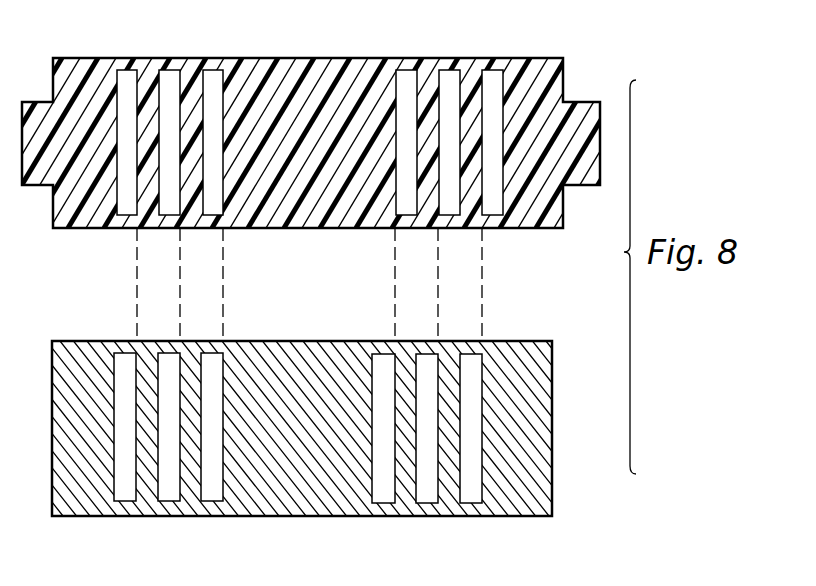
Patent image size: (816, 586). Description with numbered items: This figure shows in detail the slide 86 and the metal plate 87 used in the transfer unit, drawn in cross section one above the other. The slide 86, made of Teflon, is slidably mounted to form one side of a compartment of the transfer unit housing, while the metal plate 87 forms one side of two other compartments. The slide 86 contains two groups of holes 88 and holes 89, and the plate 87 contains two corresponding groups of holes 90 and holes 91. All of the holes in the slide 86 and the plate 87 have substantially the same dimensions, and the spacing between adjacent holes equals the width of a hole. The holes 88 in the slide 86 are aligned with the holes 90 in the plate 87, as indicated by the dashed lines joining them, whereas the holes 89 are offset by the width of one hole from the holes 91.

The slide 86 is at (120, 228).
The metal plate 87 is at (98, 516).
The holes 88 is at (209, 75).
The holes 89 is at (490, 75).
The holes 90 is at (212, 360).
The holes 91 is at (470, 363).